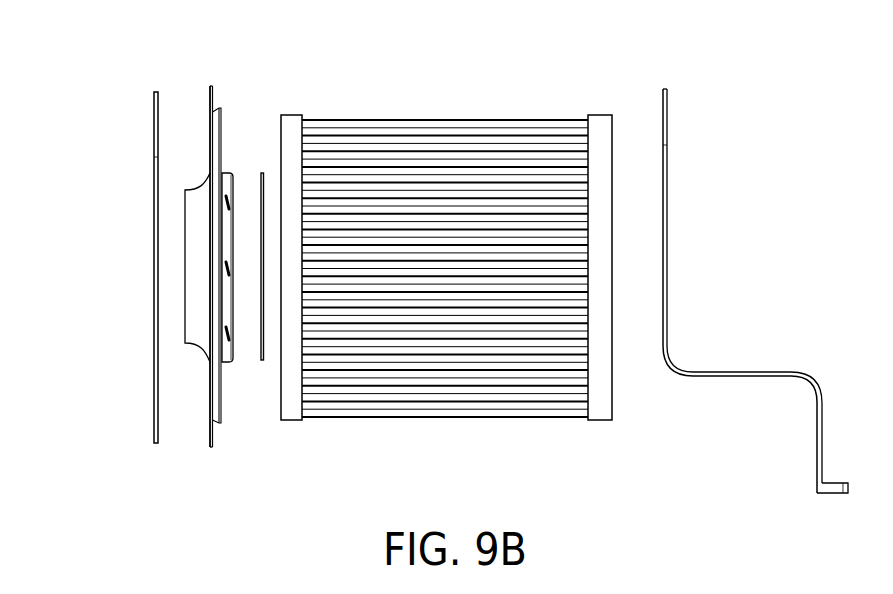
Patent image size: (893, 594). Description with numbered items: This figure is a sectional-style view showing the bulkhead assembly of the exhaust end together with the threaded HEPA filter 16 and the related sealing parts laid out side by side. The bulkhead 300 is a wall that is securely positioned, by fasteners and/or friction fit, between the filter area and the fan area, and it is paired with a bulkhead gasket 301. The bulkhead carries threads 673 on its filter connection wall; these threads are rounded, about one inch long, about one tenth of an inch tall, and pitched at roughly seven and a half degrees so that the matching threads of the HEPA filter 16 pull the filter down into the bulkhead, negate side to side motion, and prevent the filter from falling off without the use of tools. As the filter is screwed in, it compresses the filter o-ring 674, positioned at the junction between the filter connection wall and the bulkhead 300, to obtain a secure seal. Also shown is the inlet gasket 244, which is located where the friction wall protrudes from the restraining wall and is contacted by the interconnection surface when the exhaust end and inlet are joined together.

The threaded HEPA filter 16 is at (446, 118).
The inlet gasket 244 is at (667, 248).
The bulkhead 300 is at (219, 422).
The bulkhead gasket 301 is at (154, 266).
The bulkhead threads 673 is at (224, 172).
The filter o-ring 674 is at (262, 172).